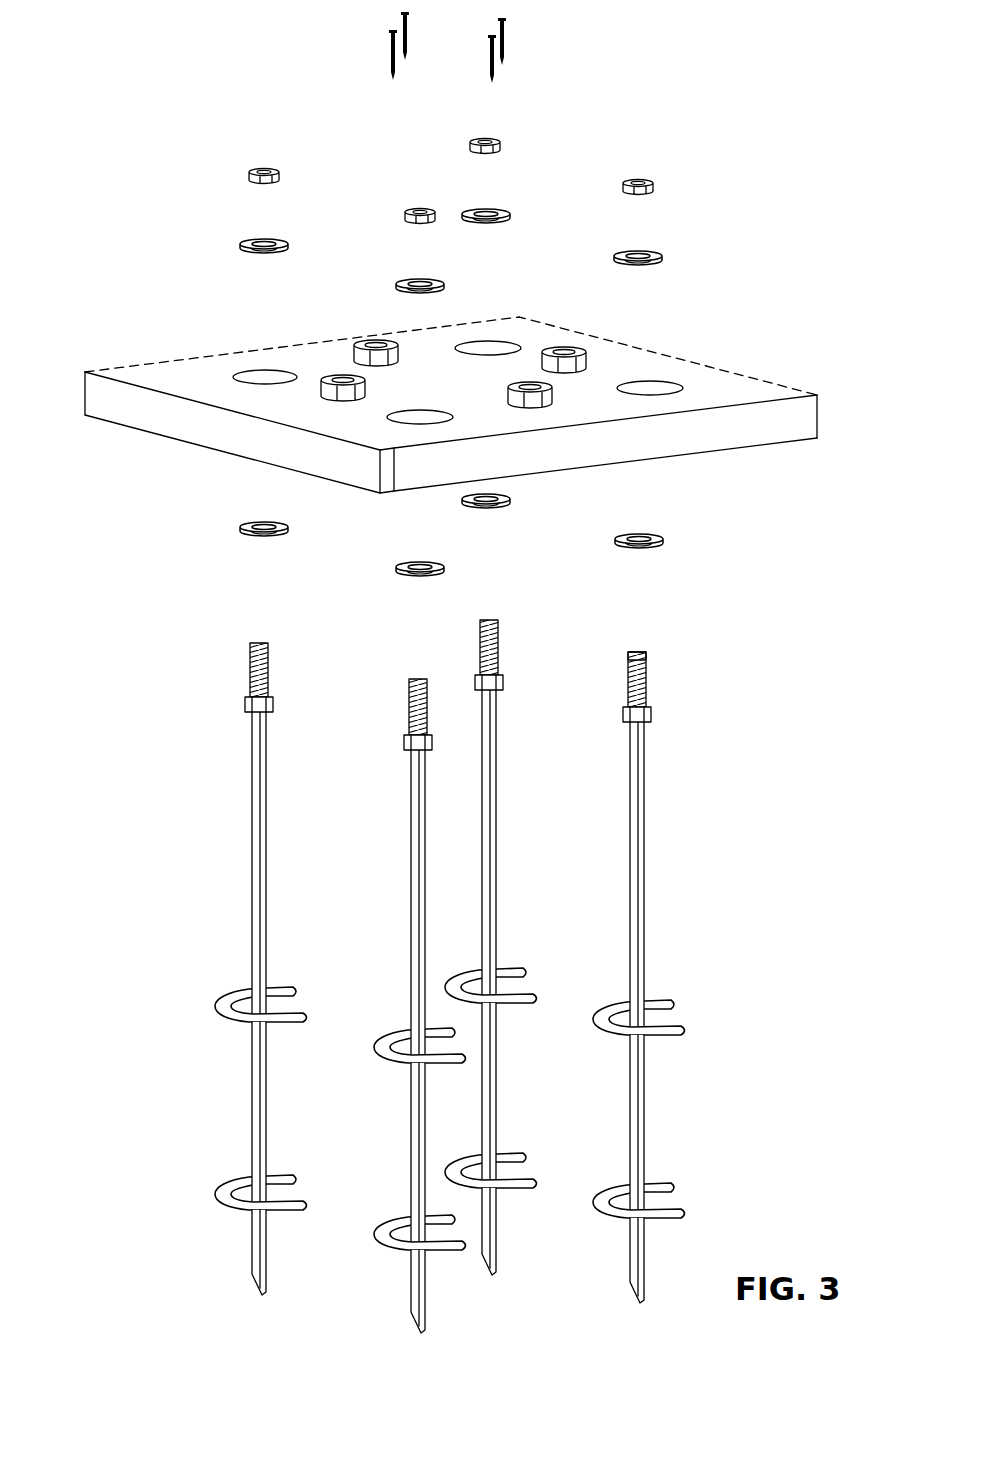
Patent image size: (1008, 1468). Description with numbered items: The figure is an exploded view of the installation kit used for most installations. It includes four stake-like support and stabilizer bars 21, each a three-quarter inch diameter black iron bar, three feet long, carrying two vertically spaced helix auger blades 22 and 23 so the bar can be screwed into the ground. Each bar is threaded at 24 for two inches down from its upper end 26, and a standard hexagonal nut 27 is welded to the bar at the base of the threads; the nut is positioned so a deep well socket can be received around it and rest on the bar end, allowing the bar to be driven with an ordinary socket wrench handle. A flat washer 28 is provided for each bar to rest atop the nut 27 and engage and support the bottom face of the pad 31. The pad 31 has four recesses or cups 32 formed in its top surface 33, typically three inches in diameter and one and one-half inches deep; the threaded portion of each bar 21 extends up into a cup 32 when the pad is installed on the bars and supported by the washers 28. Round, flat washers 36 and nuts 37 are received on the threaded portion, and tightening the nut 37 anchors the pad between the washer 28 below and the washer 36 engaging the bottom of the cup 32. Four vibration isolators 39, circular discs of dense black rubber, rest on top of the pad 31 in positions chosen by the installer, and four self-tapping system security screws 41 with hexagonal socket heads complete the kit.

The support and stabilizer bar 21 is at (655, 850).
The helix auger blade 22 is at (687, 1012).
The helix auger blade 23 is at (687, 1196).
The threaded portion 24 is at (701, 684).
The upper end of the bar 26 is at (614, 615).
The hexagonal nut 27 is at (594, 724).
The flat washer 28 is at (672, 545).
The pad 31 is at (803, 365).
The recess or cup 32 is at (647, 388).
The top surface of the pad 33 is at (167, 377).
The round flat washer 36 is at (662, 245).
The nut 37 is at (650, 165).
The vibration isolator 39 is at (343, 378).
The system security screw 41 is at (385, 52).